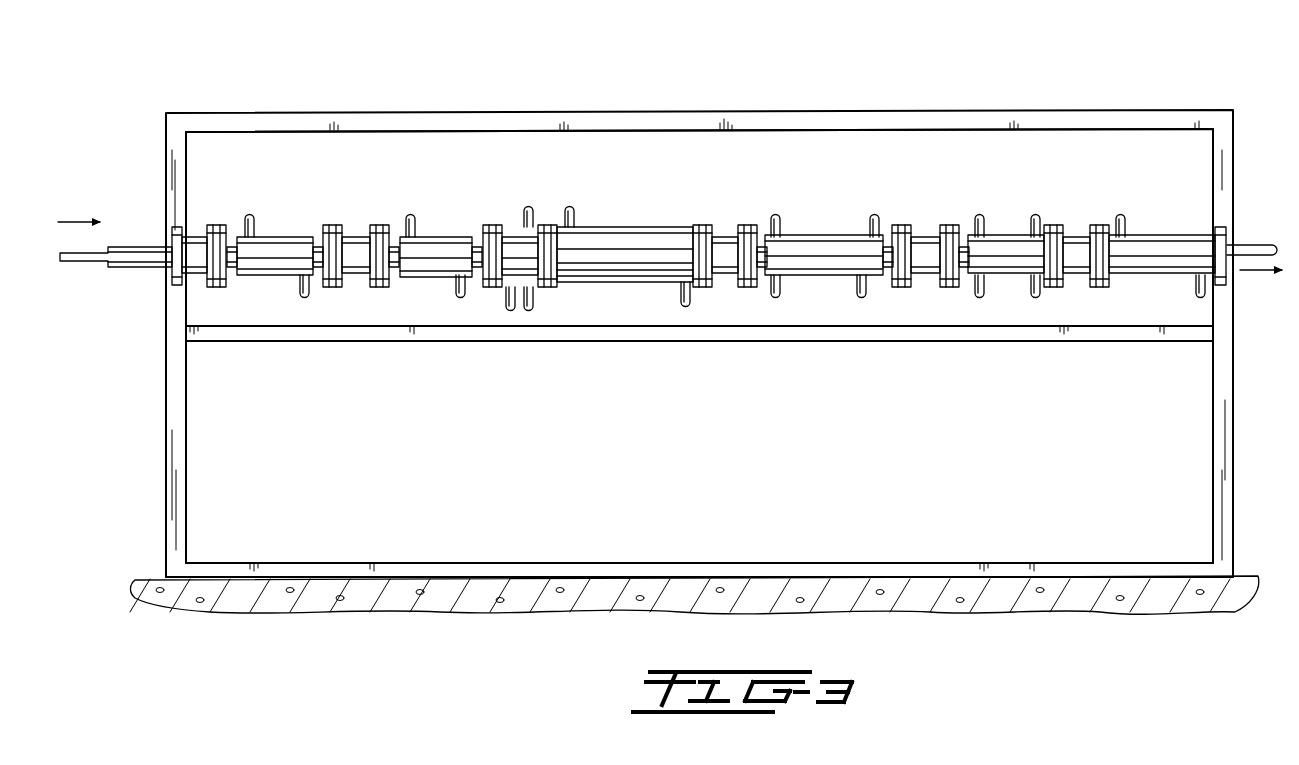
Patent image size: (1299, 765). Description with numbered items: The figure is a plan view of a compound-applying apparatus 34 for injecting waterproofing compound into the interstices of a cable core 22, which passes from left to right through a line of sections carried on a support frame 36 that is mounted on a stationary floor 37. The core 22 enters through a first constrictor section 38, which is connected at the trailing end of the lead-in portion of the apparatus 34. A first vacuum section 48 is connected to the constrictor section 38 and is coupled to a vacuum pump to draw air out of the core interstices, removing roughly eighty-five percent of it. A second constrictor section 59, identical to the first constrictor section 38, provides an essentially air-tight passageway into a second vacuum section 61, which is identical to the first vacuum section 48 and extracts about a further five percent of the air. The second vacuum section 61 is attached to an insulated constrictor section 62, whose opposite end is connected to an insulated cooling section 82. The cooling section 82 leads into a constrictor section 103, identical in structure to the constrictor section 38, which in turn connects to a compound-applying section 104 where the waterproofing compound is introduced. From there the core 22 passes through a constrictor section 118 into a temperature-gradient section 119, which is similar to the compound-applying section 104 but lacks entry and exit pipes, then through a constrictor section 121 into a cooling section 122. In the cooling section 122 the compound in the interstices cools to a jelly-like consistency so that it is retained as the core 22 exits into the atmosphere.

The cable core 22 is at (83, 264).
The compound-applying apparatus 34 is at (942, 90).
The support frame 36 is at (488, 120).
The stationary floor 37 is at (353, 614).
The first constrictor section 38 is at (198, 236).
The first vacuum section 48 is at (281, 236).
The second constrictor section 59 is at (358, 236).
The second vacuum section 61 is at (446, 236).
The insulated constrictor section 62 is at (518, 236).
The insulated cooling section 82 is at (631, 227).
The constrictor section 103 is at (723, 236).
The compound-applying section 104 is at (828, 234).
The constrictor section 118 is at (926, 236).
The temperature-gradient section 119 is at (1008, 234).
The constrictor section 121 is at (1078, 236).
The cooling section 122 is at (1161, 234).